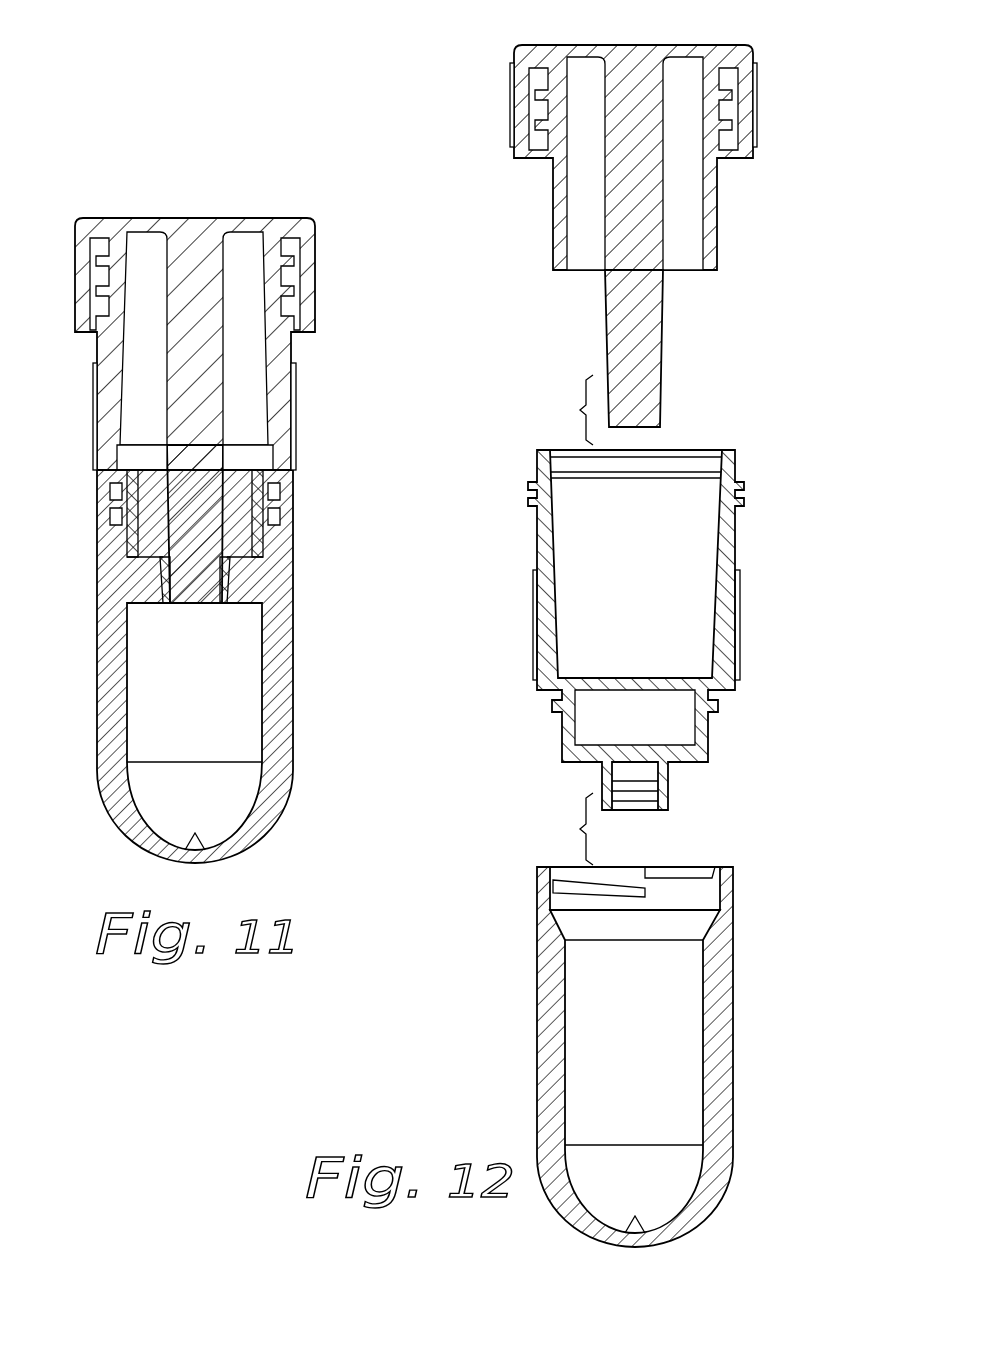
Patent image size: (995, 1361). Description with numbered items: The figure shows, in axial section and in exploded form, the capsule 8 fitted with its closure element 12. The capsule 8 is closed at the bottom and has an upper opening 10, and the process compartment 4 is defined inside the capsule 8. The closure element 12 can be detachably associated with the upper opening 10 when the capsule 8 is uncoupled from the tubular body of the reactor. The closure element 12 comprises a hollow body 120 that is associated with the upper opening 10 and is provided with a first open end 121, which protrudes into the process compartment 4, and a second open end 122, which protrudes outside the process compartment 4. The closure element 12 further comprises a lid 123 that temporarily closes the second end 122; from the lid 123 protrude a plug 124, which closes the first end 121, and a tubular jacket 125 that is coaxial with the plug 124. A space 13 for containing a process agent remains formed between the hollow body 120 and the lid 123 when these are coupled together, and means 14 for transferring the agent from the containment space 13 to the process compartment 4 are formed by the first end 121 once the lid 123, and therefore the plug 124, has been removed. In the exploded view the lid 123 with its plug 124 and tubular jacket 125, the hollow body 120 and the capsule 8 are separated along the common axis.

In FIG. 11, the process compartment 4 is at (197, 693).
In FIG. 12, the process compartment 4 is at (680, 1000).
In FIG. 11, the capsule 8 is at (176, 666).
In FIG. 12, the capsule 8 is at (621, 1012).
In FIG. 12, the upper opening 10 is at (546, 868).
In FIG. 11, the closure element 12 is at (208, 353).
In FIG. 12, the closure element 12 is at (633, 213).
In FIG. 11, the space for containing a process agent 13 is at (240, 406).
In FIG. 11, the means for transferring the agent 14 is at (236, 580).
In FIG. 11, the hollow body 120 is at (95, 378).
In FIG. 12, the hollow body 120 is at (740, 640).
In FIG. 12, the first open end 121 is at (635, 800).
In FIG. 11, the second open end 122 is at (195, 501).
In FIG. 12, the second open end 122 is at (663, 614).
In FIG. 11, the lid 123 is at (120, 222).
In FIG. 12, the lid 123 is at (548, 46).
In FIG. 11, the plug 124 is at (172, 561).
In FIG. 12, the plug 124 is at (652, 332).
In FIG. 11, the tubular jacket 125 is at (283, 350).
In FIG. 12, the tubular jacket 125 is at (556, 214).